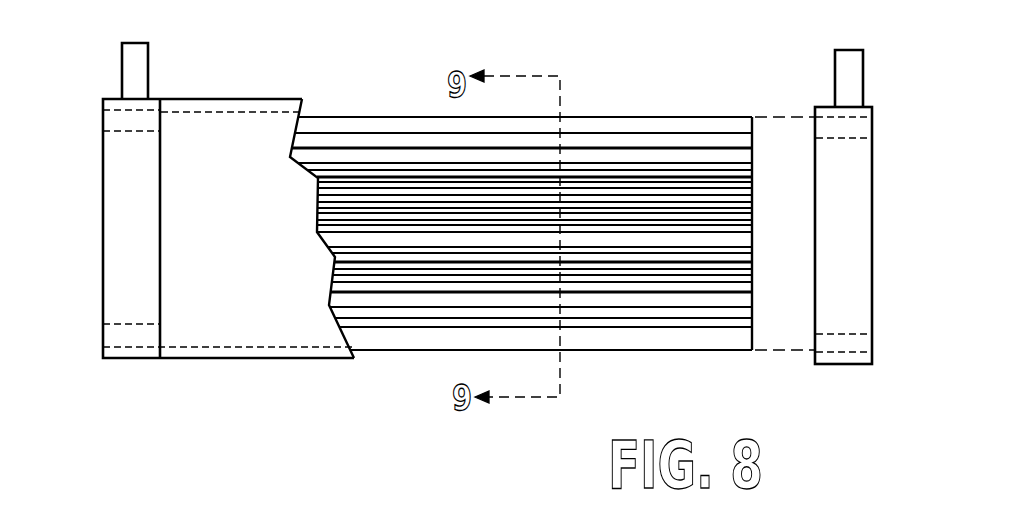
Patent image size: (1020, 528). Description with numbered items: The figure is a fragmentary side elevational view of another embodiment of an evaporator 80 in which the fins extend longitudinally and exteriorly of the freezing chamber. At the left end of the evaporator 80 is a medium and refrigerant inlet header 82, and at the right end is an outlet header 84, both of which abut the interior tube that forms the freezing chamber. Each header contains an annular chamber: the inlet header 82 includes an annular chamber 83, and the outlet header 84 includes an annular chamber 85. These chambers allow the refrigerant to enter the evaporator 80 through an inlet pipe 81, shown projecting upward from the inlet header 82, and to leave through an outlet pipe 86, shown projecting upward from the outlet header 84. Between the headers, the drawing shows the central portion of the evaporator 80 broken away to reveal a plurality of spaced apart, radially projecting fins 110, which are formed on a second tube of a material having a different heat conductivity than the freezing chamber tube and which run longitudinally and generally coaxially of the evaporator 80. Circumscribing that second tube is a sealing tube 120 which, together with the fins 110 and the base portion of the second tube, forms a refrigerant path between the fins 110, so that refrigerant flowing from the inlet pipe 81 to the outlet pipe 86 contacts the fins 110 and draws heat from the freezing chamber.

The evaporator 80 is at (522, 196).
The inlet pipe 81 is at (133, 82).
The inlet header 82 is at (123, 228).
The annular chamber 83 is at (103, 127).
The outlet header 84 is at (863, 238).
The annular chamber 85 is at (850, 127).
The outlet pipe 86 is at (858, 68).
The fins 110 is at (427, 155).
The sealing tube 120 is at (296, 333).